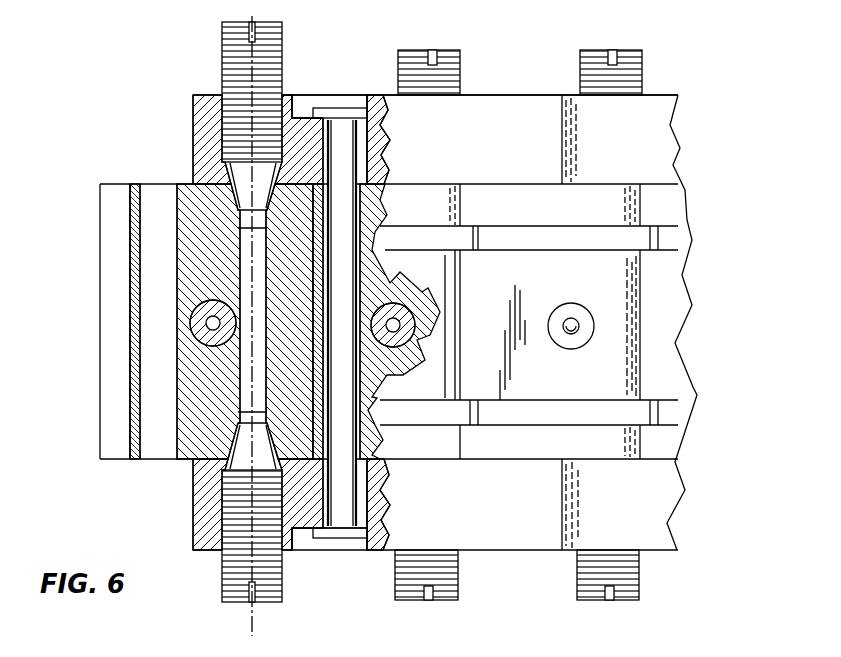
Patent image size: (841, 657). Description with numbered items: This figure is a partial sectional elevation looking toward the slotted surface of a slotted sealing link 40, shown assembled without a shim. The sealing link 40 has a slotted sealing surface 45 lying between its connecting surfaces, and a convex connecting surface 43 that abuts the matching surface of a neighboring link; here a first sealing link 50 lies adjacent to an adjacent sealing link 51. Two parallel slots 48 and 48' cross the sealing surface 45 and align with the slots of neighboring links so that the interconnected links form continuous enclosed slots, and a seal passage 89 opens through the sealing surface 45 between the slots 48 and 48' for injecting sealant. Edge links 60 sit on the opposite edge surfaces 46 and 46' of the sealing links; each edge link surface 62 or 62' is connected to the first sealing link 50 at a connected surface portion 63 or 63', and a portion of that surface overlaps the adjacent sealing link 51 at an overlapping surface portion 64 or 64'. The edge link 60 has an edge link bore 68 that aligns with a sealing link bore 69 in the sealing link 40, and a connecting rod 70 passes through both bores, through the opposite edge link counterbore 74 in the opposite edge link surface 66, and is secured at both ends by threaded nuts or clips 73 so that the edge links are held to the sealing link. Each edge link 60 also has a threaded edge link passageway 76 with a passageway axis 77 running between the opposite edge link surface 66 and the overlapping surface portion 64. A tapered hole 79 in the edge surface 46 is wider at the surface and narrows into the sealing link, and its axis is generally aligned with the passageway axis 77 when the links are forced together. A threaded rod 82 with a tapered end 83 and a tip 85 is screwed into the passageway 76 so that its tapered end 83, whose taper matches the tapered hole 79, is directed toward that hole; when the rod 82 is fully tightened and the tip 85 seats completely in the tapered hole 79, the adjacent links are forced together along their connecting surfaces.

The sealing link 40 is at (97, 357).
The connecting surface 43 is at (442, 388).
The sealing surface 45 is at (605, 372).
The edge surface 46 is at (366, 125).
The opposite edge surface 46' is at (359, 535).
The slot 48 is at (553, 219).
The slot 48' is at (556, 416).
The sealing link 50 is at (508, 445).
The adjacent sealing link 51 is at (390, 440).
The edge link 60 is at (481, 91).
The edge link surface 62 is at (467, 159).
The edge link surface 62' is at (468, 486).
The connected surface portion 63 is at (472, 129).
The connected surface portion 63' is at (540, 486).
The overlapping surface portion 64 is at (393, 300).
The overlapping surface portion 64' is at (439, 483).
The opposite edge link surface 66 is at (202, 89).
The edge link bore 68 is at (336, 522).
The sealing link bore 69 is at (324, 392).
The connecting rod 70 is at (343, 505).
The threaded nut or clip 73 is at (342, 110).
The opposite edge link counterbore 74 is at (295, 102).
The edge link passageway 76 is at (224, 115).
The passageway axis 77 is at (256, 22).
The tapered hole 79 is at (236, 224).
The rod 82 is at (226, 68).
The tapered end 83 is at (262, 457).
The tip 85 is at (135, 457).
The seal passage 89 is at (582, 326).